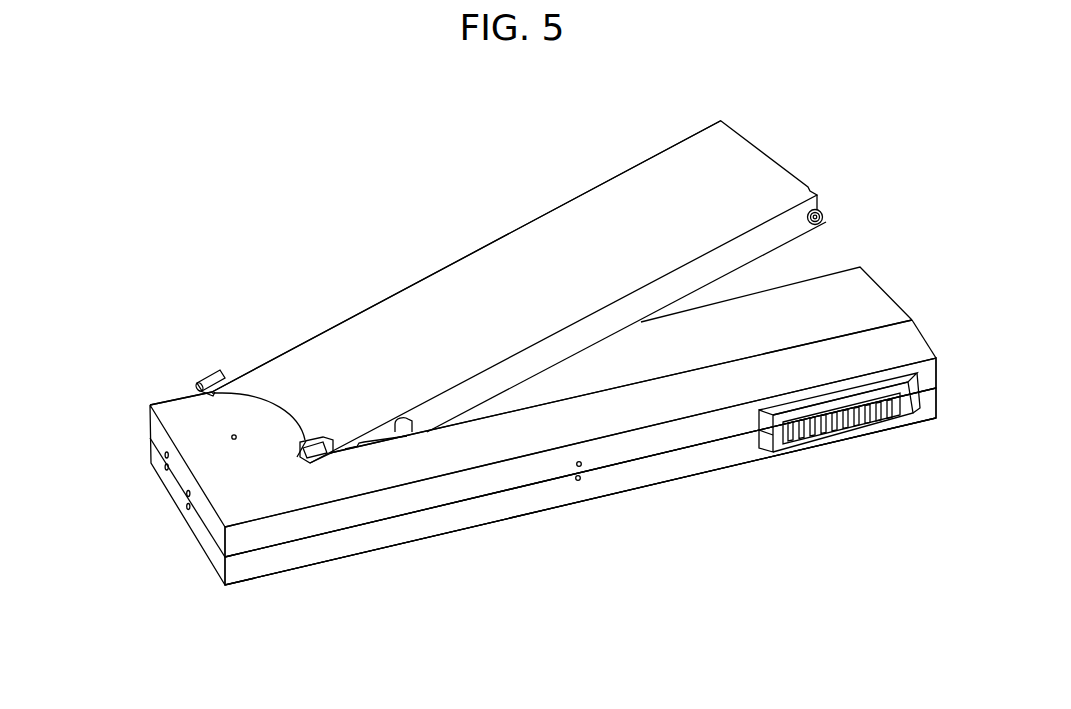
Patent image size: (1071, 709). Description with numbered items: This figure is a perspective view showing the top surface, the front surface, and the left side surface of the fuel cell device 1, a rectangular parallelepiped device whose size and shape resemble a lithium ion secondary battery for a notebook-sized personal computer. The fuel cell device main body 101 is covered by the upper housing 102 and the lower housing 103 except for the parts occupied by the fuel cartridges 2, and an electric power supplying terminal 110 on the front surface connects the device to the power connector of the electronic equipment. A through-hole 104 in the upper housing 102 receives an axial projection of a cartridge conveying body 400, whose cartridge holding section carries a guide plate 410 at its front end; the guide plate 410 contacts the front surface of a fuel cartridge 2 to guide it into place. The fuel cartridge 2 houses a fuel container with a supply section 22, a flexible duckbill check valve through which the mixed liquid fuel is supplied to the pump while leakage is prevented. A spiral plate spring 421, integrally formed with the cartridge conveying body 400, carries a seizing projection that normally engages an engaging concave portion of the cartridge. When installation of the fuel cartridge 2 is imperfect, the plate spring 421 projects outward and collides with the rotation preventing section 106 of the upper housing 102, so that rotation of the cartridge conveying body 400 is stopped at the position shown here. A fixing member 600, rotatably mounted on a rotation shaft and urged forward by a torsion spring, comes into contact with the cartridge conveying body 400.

The fuel cell device 1 is at (769, 102).
The fuel cartridge 2 is at (777, 178).
The supply section 22 is at (823, 217).
The fuel cell device main body 101 is at (538, 528).
The upper housing 102 is at (265, 538).
The lower housing 103 is at (384, 535).
The through-hole 104 is at (232, 436).
The rotation preventing section 106 is at (297, 457).
The electric power supplying terminal 110 is at (833, 432).
The cartridge conveying body 400 is at (237, 387).
The guide plate 410 is at (395, 423).
The plate spring 421 is at (317, 433).
The fixing member 600 is at (198, 384).